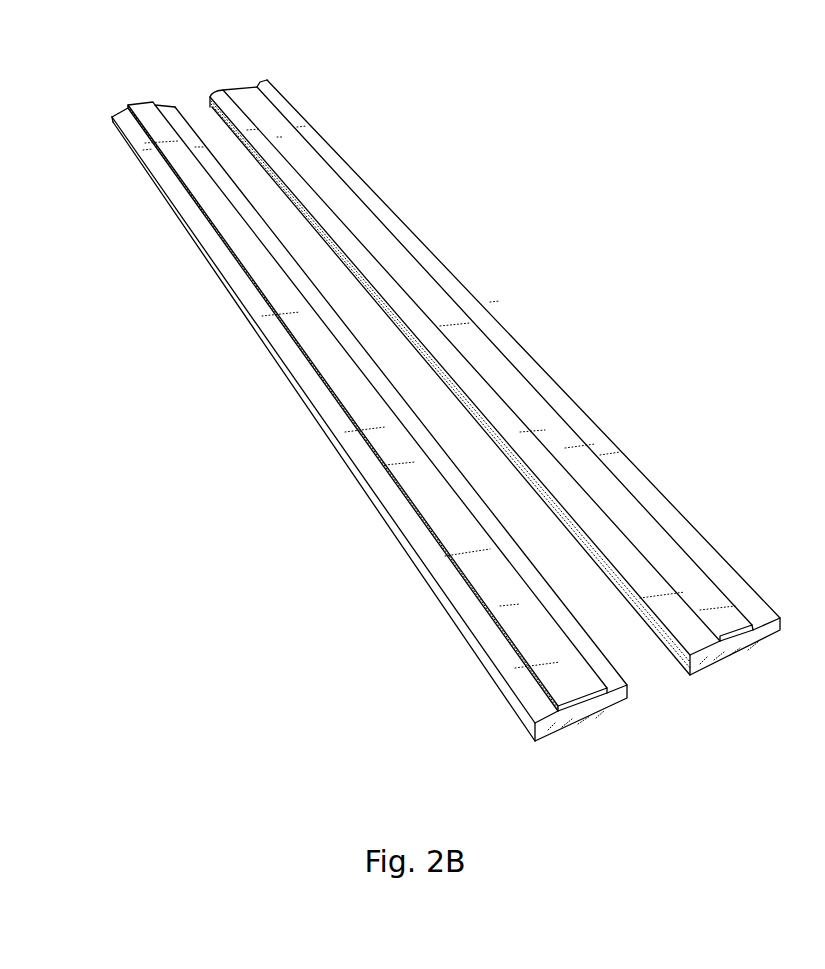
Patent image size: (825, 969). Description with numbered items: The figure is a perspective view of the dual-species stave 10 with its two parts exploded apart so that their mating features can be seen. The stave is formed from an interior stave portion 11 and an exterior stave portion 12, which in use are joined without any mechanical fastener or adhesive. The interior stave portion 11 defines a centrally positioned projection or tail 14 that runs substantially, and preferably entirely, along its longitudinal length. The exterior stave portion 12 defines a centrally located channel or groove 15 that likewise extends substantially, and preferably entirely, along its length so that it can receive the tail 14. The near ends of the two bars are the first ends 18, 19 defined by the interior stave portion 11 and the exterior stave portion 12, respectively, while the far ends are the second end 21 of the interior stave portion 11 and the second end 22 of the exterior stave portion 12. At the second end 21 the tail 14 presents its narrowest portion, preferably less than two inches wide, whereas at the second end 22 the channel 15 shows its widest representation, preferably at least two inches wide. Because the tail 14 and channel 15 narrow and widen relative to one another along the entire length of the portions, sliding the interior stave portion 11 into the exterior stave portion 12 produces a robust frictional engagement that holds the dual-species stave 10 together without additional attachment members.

The dual-species stave 10 is at (267, 73).
The interior stave portion 11 is at (415, 566).
The exterior stave portion 12 is at (586, 414).
The tail 14 is at (558, 672).
The channel 15 is at (742, 633).
The first end of interior stave portion 18 is at (610, 715).
The first end of exterior stave portion 19 is at (730, 665).
The second end of interior stave portion 21 is at (122, 109).
The second end of exterior stave portion 22 is at (263, 80).